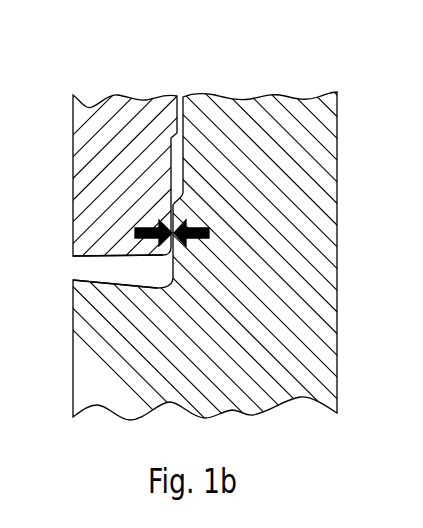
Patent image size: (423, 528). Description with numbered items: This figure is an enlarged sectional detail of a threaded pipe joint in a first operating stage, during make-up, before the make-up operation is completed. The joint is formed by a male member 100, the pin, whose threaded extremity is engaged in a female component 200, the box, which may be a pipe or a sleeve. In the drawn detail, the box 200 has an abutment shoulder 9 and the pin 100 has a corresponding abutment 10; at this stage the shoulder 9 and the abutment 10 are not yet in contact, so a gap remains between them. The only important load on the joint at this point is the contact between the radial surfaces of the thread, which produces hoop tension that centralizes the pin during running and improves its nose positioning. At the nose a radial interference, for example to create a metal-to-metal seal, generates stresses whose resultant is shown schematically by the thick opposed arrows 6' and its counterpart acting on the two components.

The female component (box) 200 is at (127, 122).
The male member (pin) 100 is at (248, 110).
The thick arrow (nose radial interference stress resultant) 6' is at (100, 223).
The abutment shoulder 9 is at (160, 267).
The abutment 10 is at (74, 279).